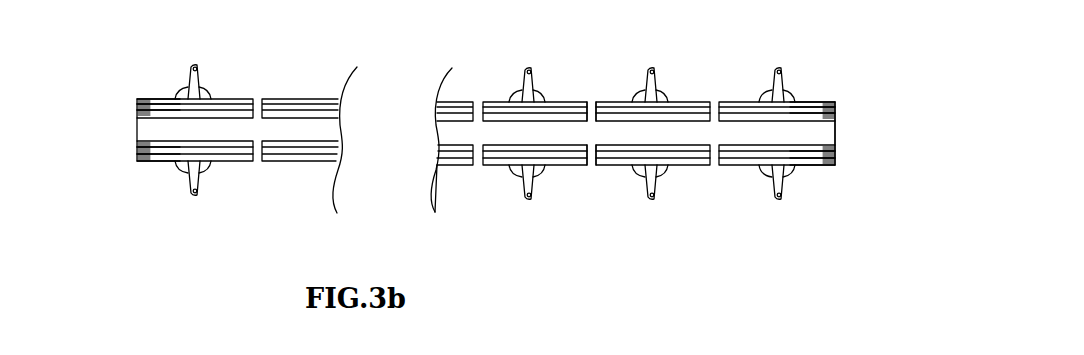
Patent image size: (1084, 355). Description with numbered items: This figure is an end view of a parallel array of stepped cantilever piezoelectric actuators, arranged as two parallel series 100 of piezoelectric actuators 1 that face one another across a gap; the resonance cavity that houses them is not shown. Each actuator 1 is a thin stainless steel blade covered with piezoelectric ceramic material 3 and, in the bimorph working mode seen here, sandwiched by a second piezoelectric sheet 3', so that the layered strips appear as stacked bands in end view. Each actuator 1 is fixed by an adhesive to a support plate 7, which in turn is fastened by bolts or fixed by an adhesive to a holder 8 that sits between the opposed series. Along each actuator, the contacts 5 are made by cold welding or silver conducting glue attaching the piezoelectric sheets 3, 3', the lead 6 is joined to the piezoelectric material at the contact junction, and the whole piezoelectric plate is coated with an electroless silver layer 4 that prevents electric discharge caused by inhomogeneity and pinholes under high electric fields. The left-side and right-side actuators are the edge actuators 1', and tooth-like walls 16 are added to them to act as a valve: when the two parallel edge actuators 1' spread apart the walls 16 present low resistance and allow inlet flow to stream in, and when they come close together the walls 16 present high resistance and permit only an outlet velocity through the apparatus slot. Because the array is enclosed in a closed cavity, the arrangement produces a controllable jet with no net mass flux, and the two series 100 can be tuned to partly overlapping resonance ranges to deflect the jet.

The stepped cantilever piezoelectric actuator 1 is at (486, 134).
The edge actuator 1' is at (496, 133).
The piezoelectric ceramic material 3 is at (490, 136).
The second piezoelectric sheet 3' is at (491, 134).
The support plate 7 is at (137, 113).
The electroless silver layer 4 is at (173, 97).
The contact 5 is at (212, 93).
The lead 6 is at (198, 66).
The holder 8 is at (569, 133).
The tooth-like wall 16 is at (140, 135).
The parallel series of piezoelectric actuators 100 is at (898, 155).